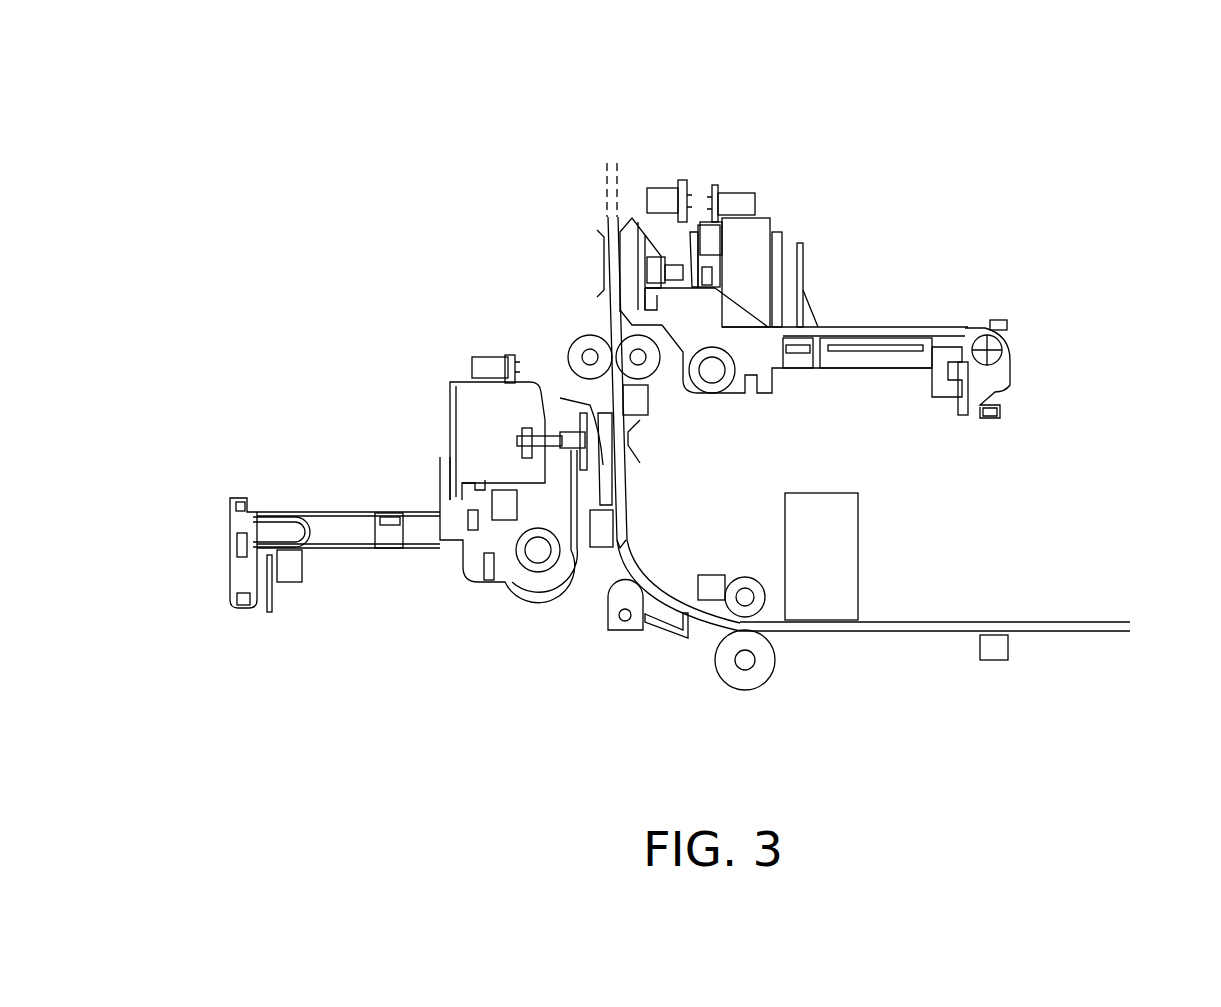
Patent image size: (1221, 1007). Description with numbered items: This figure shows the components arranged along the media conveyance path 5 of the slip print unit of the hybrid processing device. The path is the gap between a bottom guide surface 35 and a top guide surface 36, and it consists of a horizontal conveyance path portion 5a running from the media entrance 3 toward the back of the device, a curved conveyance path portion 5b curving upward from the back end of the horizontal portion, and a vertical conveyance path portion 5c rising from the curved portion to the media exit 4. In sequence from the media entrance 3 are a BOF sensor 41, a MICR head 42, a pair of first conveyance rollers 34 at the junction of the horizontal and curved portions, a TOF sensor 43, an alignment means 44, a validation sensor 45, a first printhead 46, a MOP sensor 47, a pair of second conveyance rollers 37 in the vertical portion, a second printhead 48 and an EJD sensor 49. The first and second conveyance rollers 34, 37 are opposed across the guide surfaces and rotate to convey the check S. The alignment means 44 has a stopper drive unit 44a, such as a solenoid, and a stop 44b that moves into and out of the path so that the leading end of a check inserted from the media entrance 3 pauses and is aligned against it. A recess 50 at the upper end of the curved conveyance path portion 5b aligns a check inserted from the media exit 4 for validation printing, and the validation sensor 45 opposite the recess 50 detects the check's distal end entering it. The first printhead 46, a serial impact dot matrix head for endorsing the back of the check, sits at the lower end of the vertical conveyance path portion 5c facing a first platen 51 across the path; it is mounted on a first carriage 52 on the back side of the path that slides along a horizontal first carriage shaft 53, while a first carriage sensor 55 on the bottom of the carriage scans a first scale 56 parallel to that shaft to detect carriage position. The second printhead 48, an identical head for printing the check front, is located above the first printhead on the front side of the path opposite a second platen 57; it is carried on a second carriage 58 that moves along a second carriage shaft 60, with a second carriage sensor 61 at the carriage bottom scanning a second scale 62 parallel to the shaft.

The media entrance 3 is at (1148, 626).
The media exit 4 is at (612, 145).
The media conveyance path 5 is at (1070, 612).
The horizontal conveyance path portion 5a is at (1083, 631).
The curved conveyance path portion 5b is at (660, 578).
The vertical conveyance path portion 5c is at (607, 224).
The first conveyance rollers 34 is at (747, 690).
The bottom guide surface 35 is at (912, 624).
The top guide surface 36 is at (978, 626).
The second conveyance rollers 37 is at (576, 347).
The BOF sensor 41 is at (995, 662).
The MICR head 42 is at (850, 558).
The TOF sensor 43 is at (712, 582).
The alignment means 44 is at (636, 663).
The stopper drive unit 44a is at (623, 630).
The stop 44b is at (667, 659).
The validation sensor 45 is at (598, 548).
The first printhead 46 is at (585, 410).
The MOP sensor 47 is at (648, 400).
The second printhead 48 is at (632, 271).
The EJD sensor 49 is at (663, 190).
The recess 50 is at (622, 535).
The first platen 51 is at (633, 445).
The first carriage 52 is at (475, 498).
The first carriage shaft 53 is at (535, 555).
The first carriage sensor 55 is at (236, 578).
The first scale 56 is at (272, 606).
The second platen 57 is at (602, 258).
The second carriage 58 is at (748, 333).
The second carriage shaft 60 is at (712, 370).
The second carriage sensor 61 is at (943, 387).
The second scale 62 is at (962, 410).